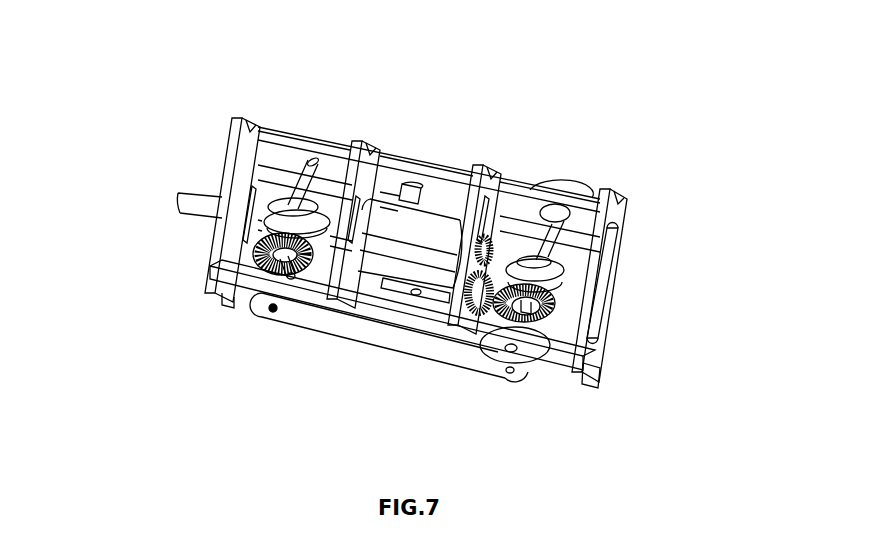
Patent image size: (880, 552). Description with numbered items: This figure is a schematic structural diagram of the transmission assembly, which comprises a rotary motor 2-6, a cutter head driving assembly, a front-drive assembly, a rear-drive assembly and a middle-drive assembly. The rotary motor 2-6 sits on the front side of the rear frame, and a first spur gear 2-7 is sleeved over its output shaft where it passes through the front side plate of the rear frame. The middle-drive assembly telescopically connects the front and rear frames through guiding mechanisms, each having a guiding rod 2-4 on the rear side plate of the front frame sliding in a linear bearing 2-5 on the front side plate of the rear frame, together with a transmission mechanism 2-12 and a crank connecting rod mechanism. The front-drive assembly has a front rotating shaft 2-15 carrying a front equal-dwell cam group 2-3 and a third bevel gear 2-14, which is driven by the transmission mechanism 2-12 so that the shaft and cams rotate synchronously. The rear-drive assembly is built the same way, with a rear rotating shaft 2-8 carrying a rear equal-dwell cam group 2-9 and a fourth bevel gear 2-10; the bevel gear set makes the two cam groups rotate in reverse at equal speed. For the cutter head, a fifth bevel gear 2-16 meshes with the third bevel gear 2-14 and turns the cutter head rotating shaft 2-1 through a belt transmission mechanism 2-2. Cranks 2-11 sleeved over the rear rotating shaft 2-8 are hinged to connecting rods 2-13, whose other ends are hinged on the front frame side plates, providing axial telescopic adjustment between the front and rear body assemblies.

The cutter head rotating shaft 2-1 is at (196, 194).
The belt transmission mechanism 2-2 is at (250, 195).
The front equal-dwell cam group 2-3 is at (293, 207).
The guiding rod 2-4 is at (387, 157).
The linear bearing 2-5 is at (410, 227).
The rotary motor 2-6 is at (432, 195).
The first spur gear 2-7 is at (504, 238).
The rear rotating shaft 2-8 is at (560, 207).
The rear equal-dwell cam group 2-9 is at (556, 266).
The fourth bevel gear 2-10 is at (582, 387).
The crank 2-11 is at (532, 345).
The transmission mechanism 2-12 is at (433, 347).
The connecting rod 2-13 is at (330, 322).
The third bevel gear 2-14 is at (291, 295).
The front rotating shaft 2-15 is at (286, 268).
The fifth bevel gear 2-16 is at (240, 262).